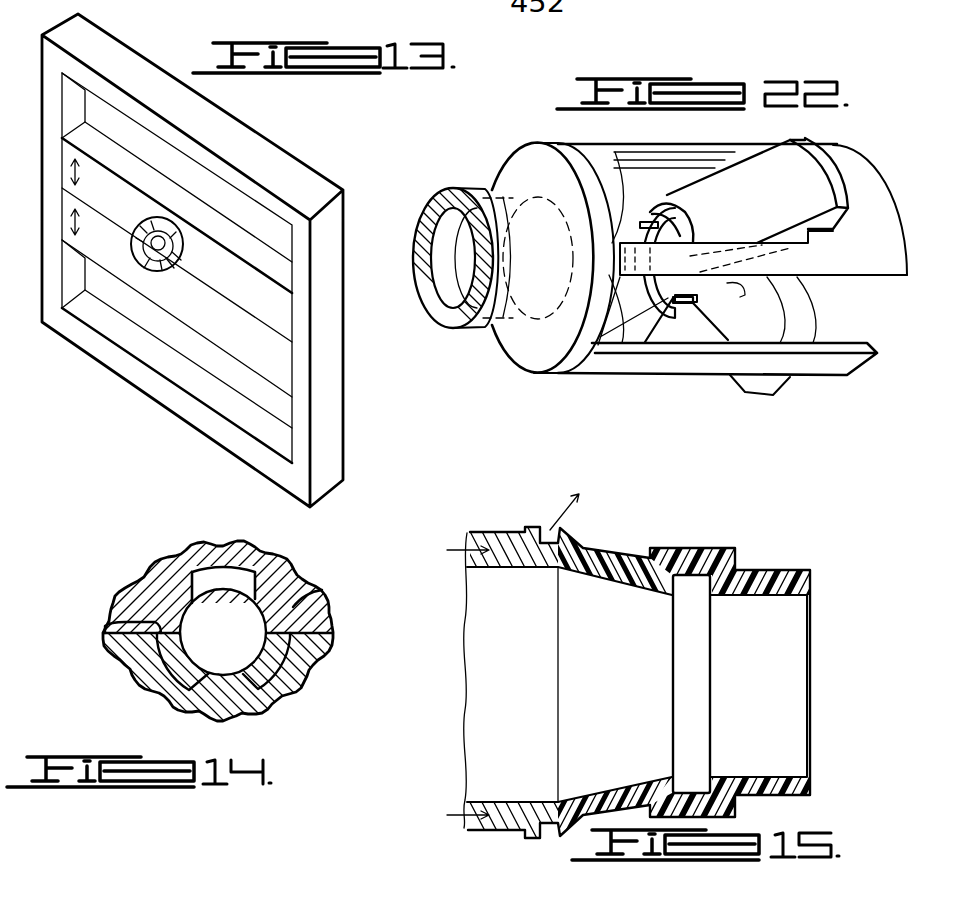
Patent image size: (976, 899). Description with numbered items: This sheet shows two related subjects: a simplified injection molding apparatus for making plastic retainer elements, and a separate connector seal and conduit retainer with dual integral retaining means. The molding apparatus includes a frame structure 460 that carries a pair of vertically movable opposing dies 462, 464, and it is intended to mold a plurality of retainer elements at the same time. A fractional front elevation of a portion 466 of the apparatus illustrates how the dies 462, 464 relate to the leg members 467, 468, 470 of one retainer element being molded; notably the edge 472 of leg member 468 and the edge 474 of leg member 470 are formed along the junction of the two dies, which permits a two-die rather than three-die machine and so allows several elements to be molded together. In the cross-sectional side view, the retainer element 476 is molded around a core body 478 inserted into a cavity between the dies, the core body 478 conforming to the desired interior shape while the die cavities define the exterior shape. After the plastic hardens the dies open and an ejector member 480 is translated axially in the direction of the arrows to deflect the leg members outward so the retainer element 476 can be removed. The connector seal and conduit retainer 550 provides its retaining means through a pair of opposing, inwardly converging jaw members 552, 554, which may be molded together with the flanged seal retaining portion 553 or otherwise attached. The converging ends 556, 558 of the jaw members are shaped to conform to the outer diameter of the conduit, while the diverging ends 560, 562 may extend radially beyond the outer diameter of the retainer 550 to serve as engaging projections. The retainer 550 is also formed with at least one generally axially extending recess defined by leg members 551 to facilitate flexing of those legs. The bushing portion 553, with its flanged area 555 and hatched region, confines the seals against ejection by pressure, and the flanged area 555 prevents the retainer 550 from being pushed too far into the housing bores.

In FIG. 13, the frame structure 460 is at (47, 288).
In FIG. 13, the die 462 is at (153, 180).
In FIG. 14, the die 462 is at (287, 573).
In FIG. 13, the die 464 is at (273, 357).
In FIG. 14, the die 464 is at (323, 655).
In FIG. 13, the portion of the apparatus 466 is at (173, 230).
In FIG. 14, the portion of the apparatus 466 is at (114, 556).
In FIG. 14, the leg member 467 is at (220, 577).
In FIG. 14, the leg member 468 is at (170, 657).
In FIG. 14, the leg member 470 is at (270, 667).
In FIG. 14, the edge of leg member 472 is at (122, 623).
In FIG. 14, the edge of leg member 474 is at (322, 594).
In FIG. 15, the retainer element 476 is at (695, 558).
In FIG. 14, the core body 478 is at (227, 663).
In FIG. 15, the core body 478 is at (637, 688).
In FIG. 15, the ejector member 480 is at (490, 533).
In FIG. 22, the connector seal and conduit retainer 550 is at (531, 401).
In FIG. 22, the leg members 551 is at (855, 345).
In FIG. 22, the jaw member 552 is at (753, 178).
In FIG. 22, the flanged seal retaining portion 553 is at (487, 190).
In FIG. 22, the jaw member 554 is at (697, 332).
In FIG. 22, the flanged area 555 is at (567, 145).
In FIG. 22, the converging end 556 is at (663, 203).
In FIG. 22, the converging end 558 is at (600, 342).
In FIG. 22, the diverging end 560 is at (813, 143).
In FIG. 22, the diverging end 562 is at (775, 392).